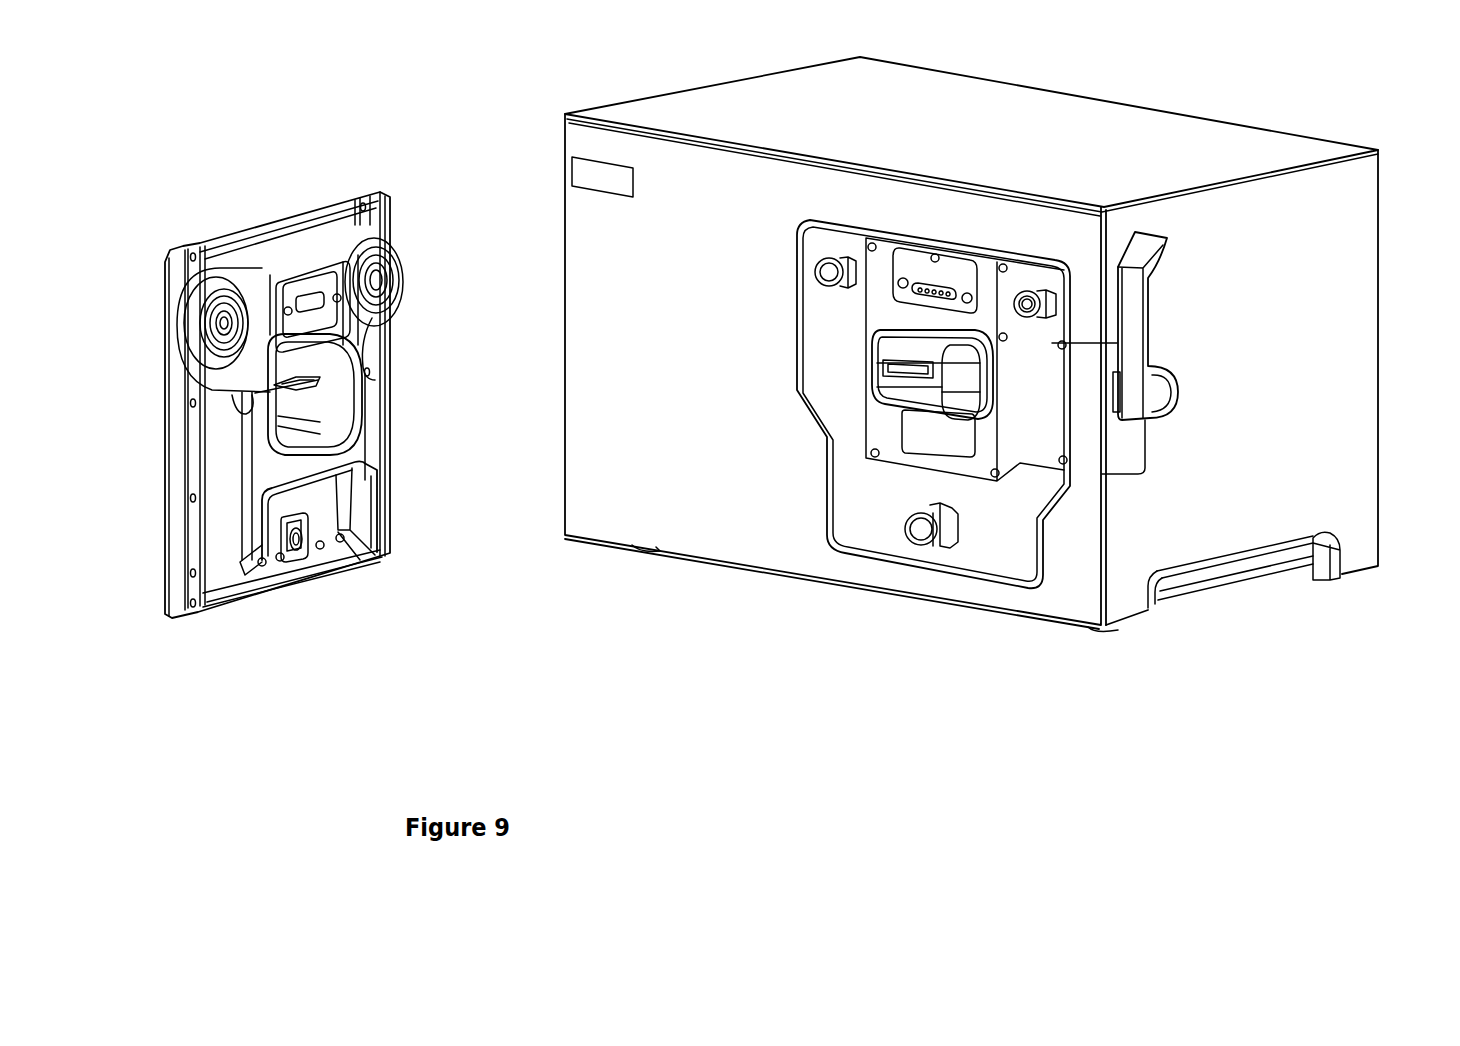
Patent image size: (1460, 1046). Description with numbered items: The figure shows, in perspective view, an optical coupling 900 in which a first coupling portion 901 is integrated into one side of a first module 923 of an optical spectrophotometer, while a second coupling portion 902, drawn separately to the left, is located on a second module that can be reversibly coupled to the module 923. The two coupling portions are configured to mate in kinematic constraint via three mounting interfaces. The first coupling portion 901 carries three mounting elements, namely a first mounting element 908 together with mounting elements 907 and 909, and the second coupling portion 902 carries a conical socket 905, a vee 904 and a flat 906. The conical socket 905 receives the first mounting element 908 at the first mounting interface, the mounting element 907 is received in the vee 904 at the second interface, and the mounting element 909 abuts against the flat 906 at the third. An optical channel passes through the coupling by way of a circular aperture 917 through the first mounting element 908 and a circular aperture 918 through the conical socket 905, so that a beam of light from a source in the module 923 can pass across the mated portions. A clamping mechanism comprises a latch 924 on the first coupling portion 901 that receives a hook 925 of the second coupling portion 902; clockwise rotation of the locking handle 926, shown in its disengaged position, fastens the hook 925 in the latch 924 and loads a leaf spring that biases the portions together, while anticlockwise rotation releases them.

The optical coupling 900 is at (287, 108).
The first coupling portion 901 is at (857, 522).
The second coupling portion 902 is at (265, 250).
The vee 904 is at (393, 277).
The conical socket 905 is at (217, 318).
The flat 906 is at (302, 560).
The mounting element 907 is at (820, 275).
The first mounting element 908 is at (1026, 290).
The mounting element 909 is at (923, 533).
The circular aperture 917 is at (1030, 303).
The circular aperture 918 is at (213, 327).
The first module 923 is at (1317, 313).
The latch 924 is at (885, 378).
The hook 925 is at (320, 380).
The locking handle 926 is at (1130, 323).